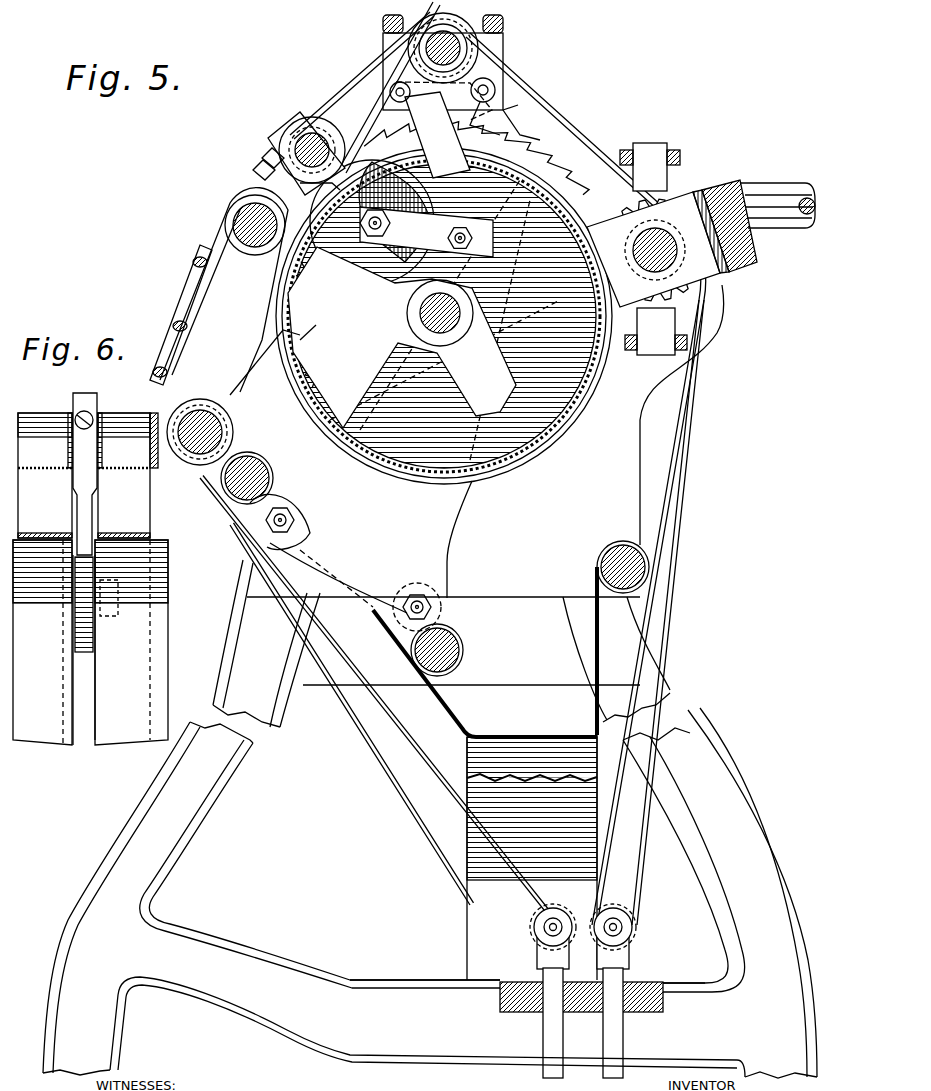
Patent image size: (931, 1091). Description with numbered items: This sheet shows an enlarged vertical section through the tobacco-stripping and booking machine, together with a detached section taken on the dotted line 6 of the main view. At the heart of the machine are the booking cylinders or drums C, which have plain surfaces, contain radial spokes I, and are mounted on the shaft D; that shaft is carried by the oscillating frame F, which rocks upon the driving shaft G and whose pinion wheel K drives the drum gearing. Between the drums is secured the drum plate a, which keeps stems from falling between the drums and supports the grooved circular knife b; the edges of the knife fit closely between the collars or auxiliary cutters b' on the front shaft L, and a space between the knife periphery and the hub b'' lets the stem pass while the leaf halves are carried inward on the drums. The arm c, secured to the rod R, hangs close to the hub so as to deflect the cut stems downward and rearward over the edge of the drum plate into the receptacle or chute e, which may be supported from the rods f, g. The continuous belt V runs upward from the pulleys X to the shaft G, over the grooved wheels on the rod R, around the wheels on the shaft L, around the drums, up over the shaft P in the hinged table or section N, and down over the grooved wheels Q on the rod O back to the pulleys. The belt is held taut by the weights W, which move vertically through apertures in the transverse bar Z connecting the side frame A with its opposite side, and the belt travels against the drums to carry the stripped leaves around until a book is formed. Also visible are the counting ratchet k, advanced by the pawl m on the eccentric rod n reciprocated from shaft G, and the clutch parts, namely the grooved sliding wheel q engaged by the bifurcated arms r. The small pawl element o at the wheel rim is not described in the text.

In FIG. 5, the booking cylinders or drums C is at (444, 316).
In FIG. 6, the booking cylinders or drums C is at (90, 642).
In FIG. 5, the shaft D is at (402, 337).
In FIG. 5, the radial spokes I is at (416, 270).
In FIG. 5, the ratchet wheel k is at (476, 158).
In FIG. 5, the rod R is at (480, 37).
In FIG. 5, the pawl m is at (444, 127).
In FIG. 5, the eccentric rod n is at (402, 113).
In FIG. 5, the grooved sliding wheel q is at (485, 95).
In FIG. 5, the bifurcated arms r is at (513, 106).
In FIG. 5, the arm c is at (434, 9).
In FIG. 6, the arm c is at (85, 474).
In FIG. 5, the shaft L is at (318, 120).
In FIG. 5, the hub b'' is at (281, 142).
In FIG. 5, the collars or auxiliary cutters b' is at (268, 160).
In FIG. 5, the grooved circular knife b is at (310, 193).
In FIG. 6, the grooved circular knife b is at (84, 650).
In FIG. 5, the section line 6 is at (364, 105).
In FIG. 5, the continuous belt V is at (453, 468).
In FIG. 6, the continuous belt V is at (88, 475).
In FIG. 5, the shaft G is at (653, 249).
In FIG. 5, the pinion wheel K is at (678, 190).
In FIG. 6, the pinion wheel K is at (95, 410).
In FIG. 5, the frame F is at (754, 221).
In FIG. 5, the hinged table or section N is at (181, 315).
In FIG. 5, the shaft P is at (224, 290).
In FIG. 5, the grooved wheels Q is at (202, 400).
In FIG. 5, the rod O is at (222, 410).
In FIG. 5, the pawl o is at (306, 332).
In FIG. 5, the rod g is at (264, 470).
In FIG. 5, the drum plate a is at (497, 511).
In FIG. 5, the side or frame A is at (458, 652).
In FIG. 5, the rod f is at (598, 567).
In FIG. 5, the receptacle or chute e is at (532, 843).
In FIG. 5, the pulleys X is at (575, 922).
In FIG. 5, the transverse bar Z is at (527, 987).
In FIG. 5, the weights W is at (567, 1023).